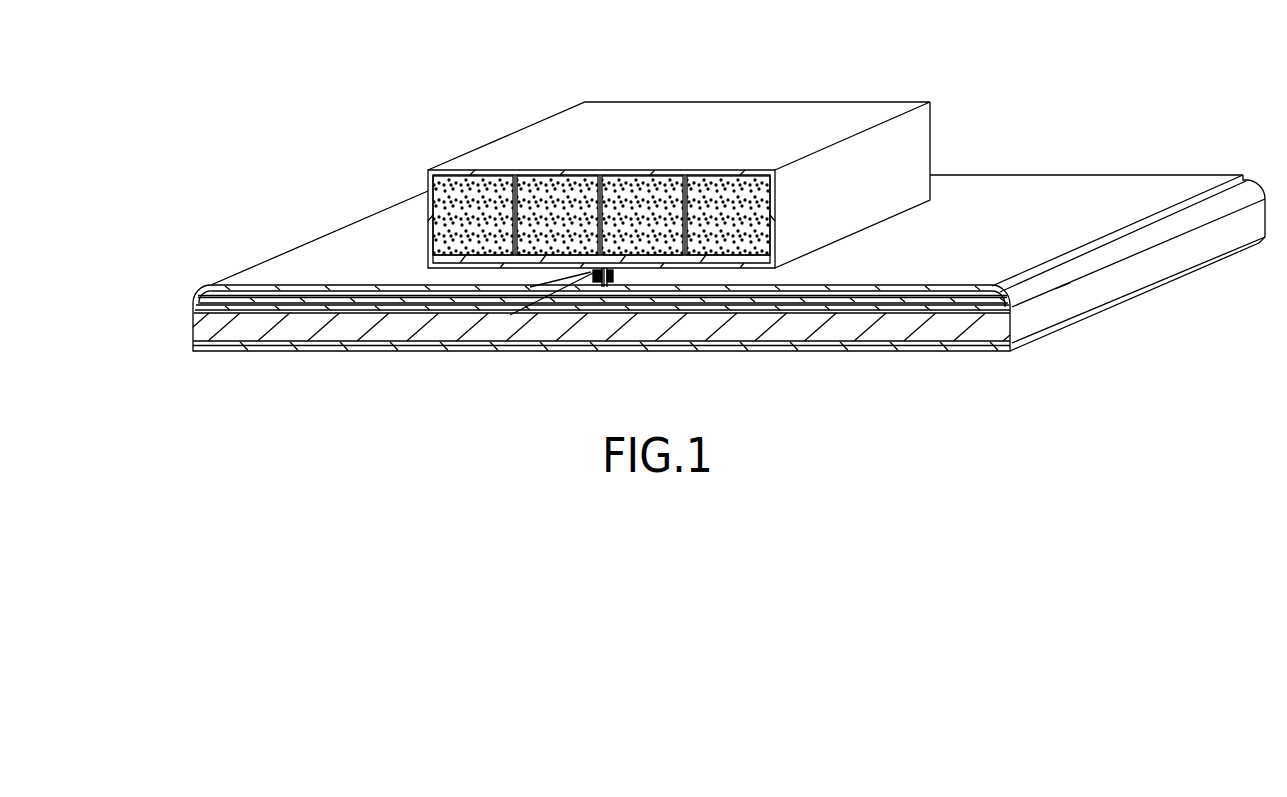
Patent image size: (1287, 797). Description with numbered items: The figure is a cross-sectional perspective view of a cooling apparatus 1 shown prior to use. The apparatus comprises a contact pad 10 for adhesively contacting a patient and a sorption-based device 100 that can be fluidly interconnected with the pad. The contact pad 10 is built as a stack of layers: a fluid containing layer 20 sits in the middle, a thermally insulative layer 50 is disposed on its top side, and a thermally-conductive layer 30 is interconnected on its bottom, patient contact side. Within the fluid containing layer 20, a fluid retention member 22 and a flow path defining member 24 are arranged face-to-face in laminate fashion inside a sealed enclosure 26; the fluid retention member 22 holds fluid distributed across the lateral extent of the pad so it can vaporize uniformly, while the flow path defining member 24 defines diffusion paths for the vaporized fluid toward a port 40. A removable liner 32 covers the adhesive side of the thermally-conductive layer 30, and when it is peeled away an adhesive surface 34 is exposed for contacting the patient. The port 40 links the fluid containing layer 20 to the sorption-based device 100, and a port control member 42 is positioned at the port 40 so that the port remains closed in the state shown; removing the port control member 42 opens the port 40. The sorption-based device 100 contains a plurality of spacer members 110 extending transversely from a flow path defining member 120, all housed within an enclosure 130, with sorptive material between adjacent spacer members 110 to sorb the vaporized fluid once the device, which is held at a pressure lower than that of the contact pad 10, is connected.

The cooling apparatus 1 is at (408, 88).
The contact pad 10 is at (1181, 159).
The fluid containing layer 20 is at (171, 298).
The fluid retention member 22 is at (233, 313).
The flow path defining member 24 is at (217, 298).
The sealed enclosure 26 is at (192, 307).
The thermally-conductive layer 30 is at (1013, 330).
The removable liner 32 is at (1005, 348).
The adhesive surface 34 is at (228, 353).
The port 40 is at (597, 278).
The port control member 42 is at (510, 315).
The thermally insulative layer 50 is at (1066, 288).
The sorption-based device 100 is at (889, 88).
The spacer members 110 is at (517, 178).
The flow path defining member 120 is at (776, 250).
The enclosure 130 is at (930, 133).